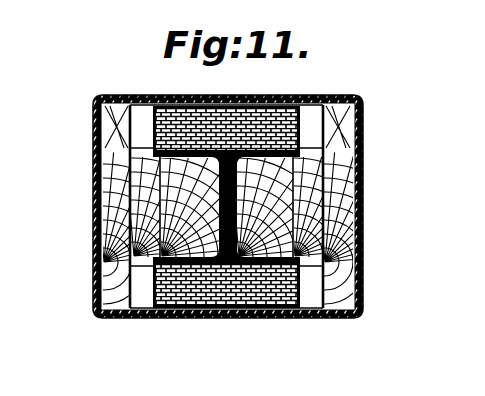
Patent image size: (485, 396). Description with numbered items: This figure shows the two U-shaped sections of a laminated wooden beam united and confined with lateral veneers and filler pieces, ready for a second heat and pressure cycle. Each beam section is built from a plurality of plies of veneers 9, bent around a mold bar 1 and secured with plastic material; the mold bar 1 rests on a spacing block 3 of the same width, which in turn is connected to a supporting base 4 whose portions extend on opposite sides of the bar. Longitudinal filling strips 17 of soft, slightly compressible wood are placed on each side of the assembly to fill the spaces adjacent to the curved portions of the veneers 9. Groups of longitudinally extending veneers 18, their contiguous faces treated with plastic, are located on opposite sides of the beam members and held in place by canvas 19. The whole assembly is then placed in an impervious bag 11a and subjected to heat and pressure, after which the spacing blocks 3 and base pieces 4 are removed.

The mold bar 1 is at (168, 193).
The spacing block 3 is at (150, 217).
The supporting base 4 is at (113, 252).
The veneers 9 is at (147, 143).
The impervious bag 11a is at (308, 99).
The longitudinal filling strips 17 is at (231, 158).
The longitudinally extending veneers 18 is at (168, 108).
The canvas 19 is at (362, 143).